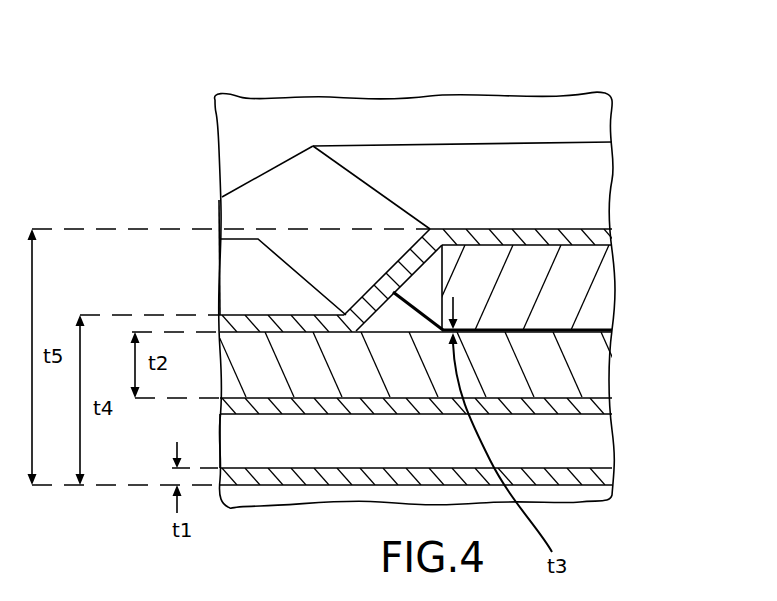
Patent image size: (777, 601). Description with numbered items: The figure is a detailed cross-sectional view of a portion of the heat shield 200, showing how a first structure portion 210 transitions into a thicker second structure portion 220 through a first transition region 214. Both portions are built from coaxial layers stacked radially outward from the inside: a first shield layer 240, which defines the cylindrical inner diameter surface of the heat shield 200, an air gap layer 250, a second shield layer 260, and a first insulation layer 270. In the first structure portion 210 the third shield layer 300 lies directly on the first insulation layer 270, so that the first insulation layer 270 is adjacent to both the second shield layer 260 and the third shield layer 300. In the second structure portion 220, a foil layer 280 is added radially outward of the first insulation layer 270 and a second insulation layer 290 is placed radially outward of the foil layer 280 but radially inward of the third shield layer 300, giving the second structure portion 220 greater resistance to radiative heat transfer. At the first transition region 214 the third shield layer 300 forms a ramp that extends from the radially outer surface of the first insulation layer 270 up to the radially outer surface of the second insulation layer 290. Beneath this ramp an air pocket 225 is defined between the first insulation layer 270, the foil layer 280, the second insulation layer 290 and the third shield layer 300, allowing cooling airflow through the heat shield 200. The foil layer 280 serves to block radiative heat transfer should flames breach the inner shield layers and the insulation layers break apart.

The heat shield 200 is at (163, 57).
The first structure portion 210 is at (245, 292).
The first transition region 214 is at (382, 280).
The second structure portion 220 is at (485, 195).
The air pocket 225 is at (420, 290).
The first shield layer 240 is at (612, 471).
The air gap layer 250 is at (612, 441).
The second shield layer 260 is at (612, 411).
The first insulation layer 270 is at (612, 363).
The foil layer 280 is at (612, 333).
The second insulation layer 290 is at (612, 283).
The third shield layer 300 is at (612, 236).